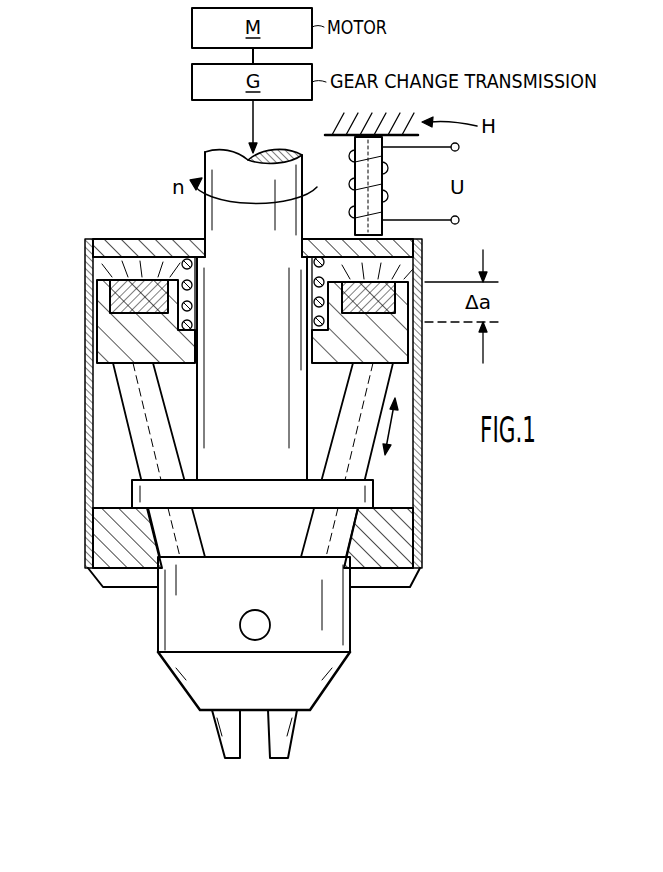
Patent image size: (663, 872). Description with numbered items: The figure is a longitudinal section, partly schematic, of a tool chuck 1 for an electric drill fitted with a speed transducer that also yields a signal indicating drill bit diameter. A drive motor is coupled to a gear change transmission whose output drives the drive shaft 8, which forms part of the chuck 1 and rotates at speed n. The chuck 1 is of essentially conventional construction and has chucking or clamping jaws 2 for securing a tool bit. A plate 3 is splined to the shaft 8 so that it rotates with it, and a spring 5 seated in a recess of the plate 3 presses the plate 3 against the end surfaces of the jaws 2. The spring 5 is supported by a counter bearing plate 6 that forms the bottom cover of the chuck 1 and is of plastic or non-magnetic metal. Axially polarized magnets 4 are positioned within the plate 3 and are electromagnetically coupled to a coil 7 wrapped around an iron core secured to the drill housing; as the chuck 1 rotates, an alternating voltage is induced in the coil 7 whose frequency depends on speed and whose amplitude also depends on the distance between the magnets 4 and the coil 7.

The tool chuck 1 is at (398, 475).
The chucking jaws 2 is at (148, 392).
The plate 3 is at (113, 352).
The magnets 4 is at (112, 298).
The spring 5 is at (183, 258).
The counter bearing plate 6 is at (113, 243).
The coil 7 is at (372, 180).
The drive shaft 8 is at (228, 162).